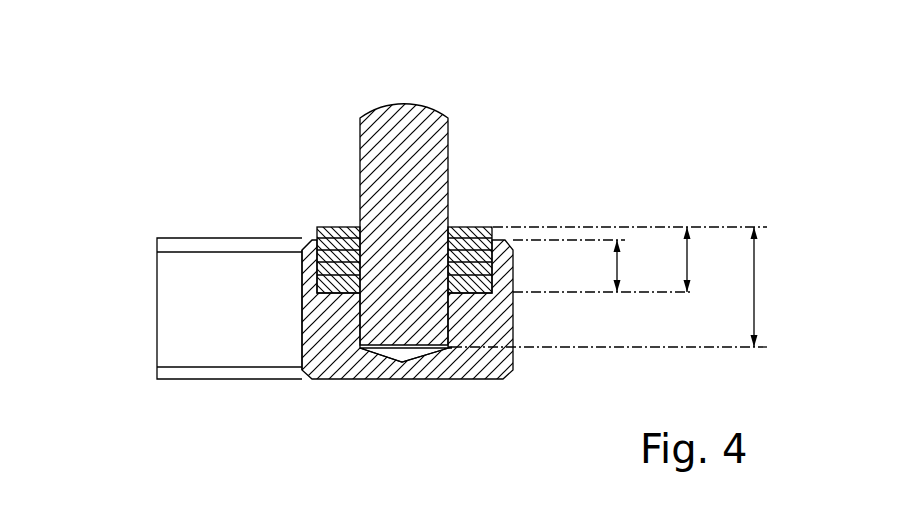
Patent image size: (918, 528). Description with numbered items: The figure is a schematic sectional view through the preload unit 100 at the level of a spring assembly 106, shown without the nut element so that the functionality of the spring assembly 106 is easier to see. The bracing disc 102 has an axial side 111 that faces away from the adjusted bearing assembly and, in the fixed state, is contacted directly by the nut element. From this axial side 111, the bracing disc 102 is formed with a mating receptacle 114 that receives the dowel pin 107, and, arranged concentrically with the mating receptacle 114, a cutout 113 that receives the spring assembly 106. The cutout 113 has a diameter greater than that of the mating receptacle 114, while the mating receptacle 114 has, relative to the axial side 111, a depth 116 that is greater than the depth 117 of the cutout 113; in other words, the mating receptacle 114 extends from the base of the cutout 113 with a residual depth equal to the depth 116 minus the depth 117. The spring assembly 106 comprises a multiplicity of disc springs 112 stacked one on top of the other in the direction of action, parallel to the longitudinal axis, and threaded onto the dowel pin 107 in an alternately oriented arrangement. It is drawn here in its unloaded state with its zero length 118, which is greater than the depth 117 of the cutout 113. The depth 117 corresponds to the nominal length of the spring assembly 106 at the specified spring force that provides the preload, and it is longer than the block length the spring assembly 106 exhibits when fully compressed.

The preload unit 100 is at (248, 117).
The bracing disc 102 is at (193, 275).
The spring assembly 106 is at (515, 162).
The dowel pin 107 is at (412, 117).
The axial side 111 is at (213, 233).
The disc springs 112 is at (335, 228).
The cutout 113 is at (302, 317).
The mating receptacle 114 is at (360, 303).
The depth 116 is at (757, 277).
The depth 117 is at (623, 267).
The zero length 118 is at (693, 267).